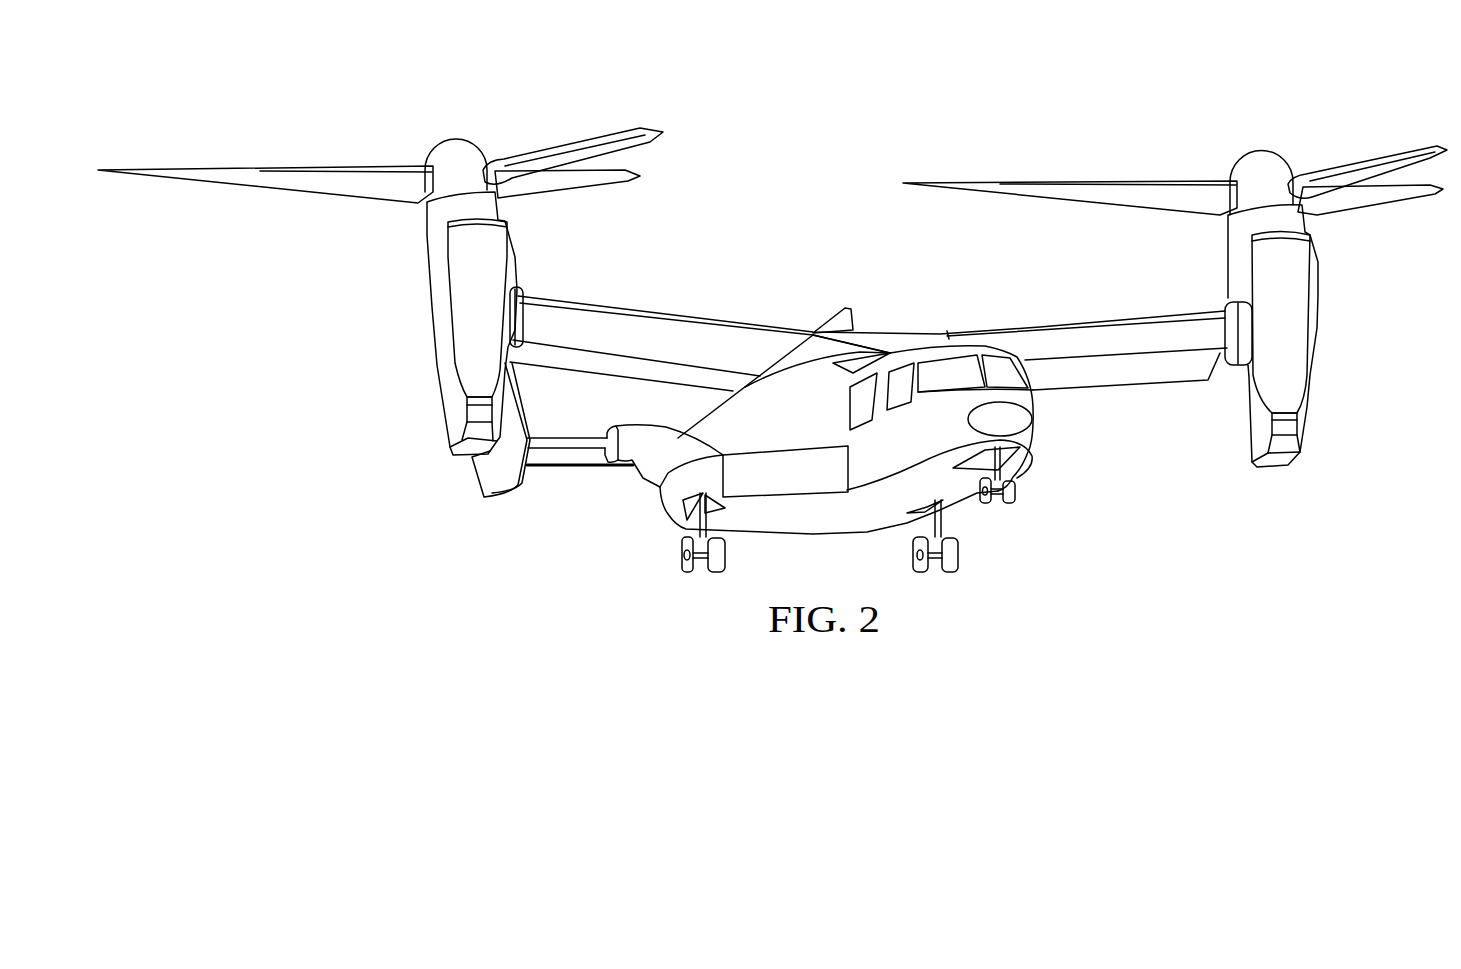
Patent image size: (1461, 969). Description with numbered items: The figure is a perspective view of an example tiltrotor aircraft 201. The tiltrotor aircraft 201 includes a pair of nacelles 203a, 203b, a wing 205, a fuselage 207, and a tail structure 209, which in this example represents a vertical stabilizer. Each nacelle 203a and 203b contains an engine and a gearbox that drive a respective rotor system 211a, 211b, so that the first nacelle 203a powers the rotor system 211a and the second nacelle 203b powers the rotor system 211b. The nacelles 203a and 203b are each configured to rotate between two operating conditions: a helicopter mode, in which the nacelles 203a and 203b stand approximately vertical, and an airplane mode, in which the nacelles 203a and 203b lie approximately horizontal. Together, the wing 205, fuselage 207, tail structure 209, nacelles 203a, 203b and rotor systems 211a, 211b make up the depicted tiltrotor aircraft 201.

The tiltrotor aircraft 201 is at (1030, 105).
The nacelle 203a is at (418, 387).
The nacelle 203b is at (1322, 413).
The wing 205 is at (668, 312).
The fuselage 207 is at (1035, 430).
The tail structure 209 is at (603, 503).
The rotor system 211a is at (273, 170).
The rotor system 211b is at (1395, 148).